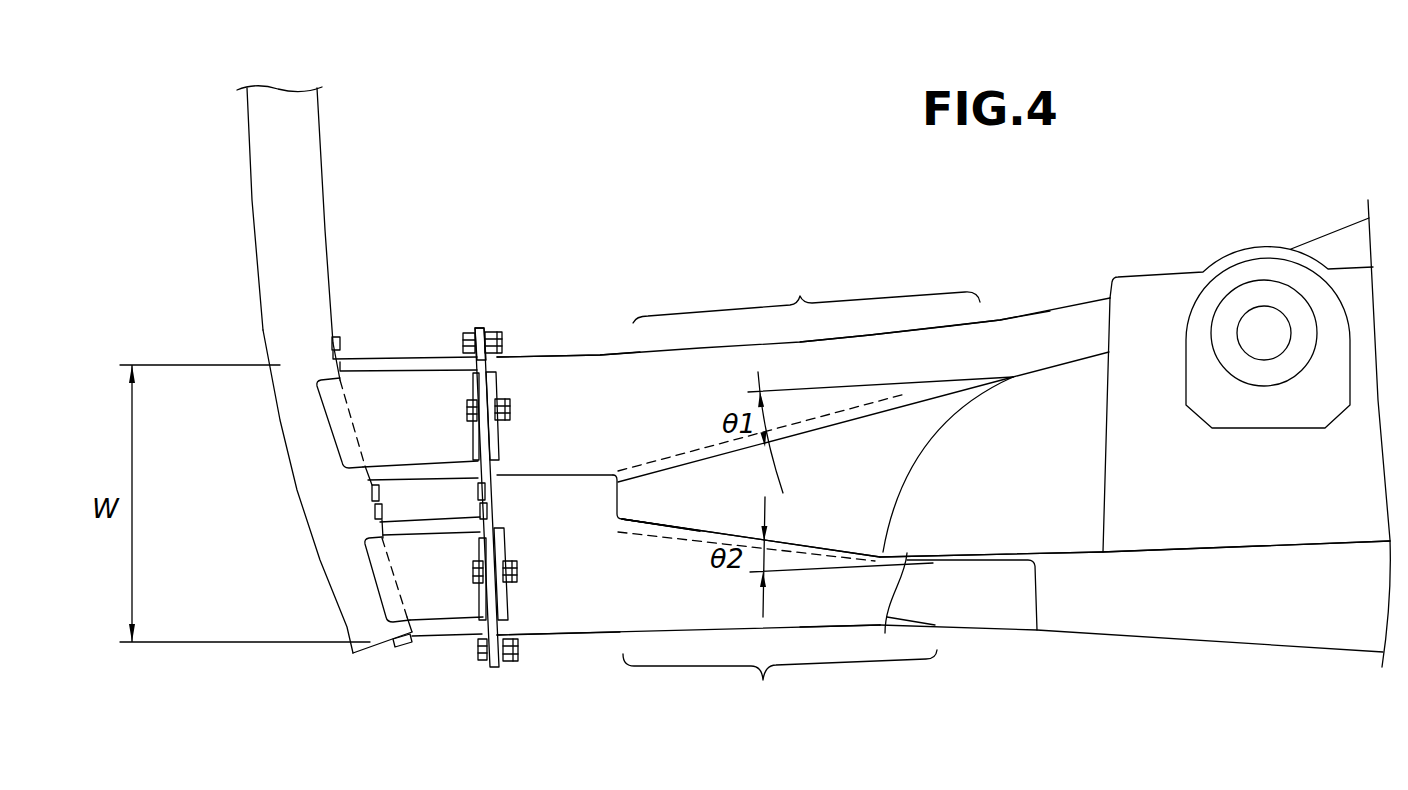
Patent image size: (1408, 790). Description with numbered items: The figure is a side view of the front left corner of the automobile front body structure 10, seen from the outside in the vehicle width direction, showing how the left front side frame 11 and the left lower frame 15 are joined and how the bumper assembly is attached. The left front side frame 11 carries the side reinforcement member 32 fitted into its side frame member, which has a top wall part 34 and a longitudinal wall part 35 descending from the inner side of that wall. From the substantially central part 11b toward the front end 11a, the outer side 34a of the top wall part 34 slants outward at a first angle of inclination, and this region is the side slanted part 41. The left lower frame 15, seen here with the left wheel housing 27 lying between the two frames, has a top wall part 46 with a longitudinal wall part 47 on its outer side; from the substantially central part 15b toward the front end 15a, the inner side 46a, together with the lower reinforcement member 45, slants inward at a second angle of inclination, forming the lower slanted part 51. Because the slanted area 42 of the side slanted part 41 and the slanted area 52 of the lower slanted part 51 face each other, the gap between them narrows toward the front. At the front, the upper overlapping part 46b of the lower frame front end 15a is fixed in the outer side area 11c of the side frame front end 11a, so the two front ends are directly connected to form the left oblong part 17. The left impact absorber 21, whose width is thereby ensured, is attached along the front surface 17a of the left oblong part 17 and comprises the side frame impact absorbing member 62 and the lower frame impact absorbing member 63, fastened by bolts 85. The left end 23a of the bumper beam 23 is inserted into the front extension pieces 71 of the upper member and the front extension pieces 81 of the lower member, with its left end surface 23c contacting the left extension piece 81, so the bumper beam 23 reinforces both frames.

The automobile front body structure 10 is at (710, 153).
The left front side frame 11 is at (1045, 325).
The front end of the left front side frame 11a is at (567, 370).
The substantially central part of the left front side frame 11b is at (997, 335).
The outer side area of the side frame front end 11c is at (515, 465).
The left lower frame 15 is at (1010, 613).
The front end of the left lower frame 15a is at (552, 630).
The substantially central part of the left lower frame 15b is at (950, 610).
The left oblong part 17 is at (527, 357).
The front surface of the left oblong part 17a is at (482, 338).
The left impact absorber 21 is at (452, 252).
The bumper beam 23 is at (263, 168).
The left end of the bumper beam 23a is at (300, 490).
The left end surface of the bumper beam 23c is at (373, 653).
The left wheel housing 27 is at (1150, 295).
The side reinforcement member 32 is at (840, 421).
The top wall part 34 is at (705, 375).
The outer side of the top wall part 34a is at (800, 437).
The longitudinal wall part 35 is at (870, 335).
The side slanted part 41 is at (800, 296).
The slanted area of the side slanted part 42 is at (697, 465).
The lower reinforcement member 45 is at (835, 550).
The top wall part of the lower frame member 46 is at (662, 603).
The inner side of the top wall part 46a is at (797, 540).
The upper overlapping part 46b is at (567, 470).
The longitudinal wall part of the lower frame member 47 is at (840, 630).
The lower slanted part 51 is at (780, 696).
The slanted area of the lower slanted part 52 is at (681, 530).
The side frame impact absorbing member 62 is at (392, 358).
The lower frame impact absorbing member 63 is at (445, 646).
The front extension pieces 71 is at (330, 408).
The front extension pieces 81 is at (383, 572).
The bolts 85 is at (467, 413).